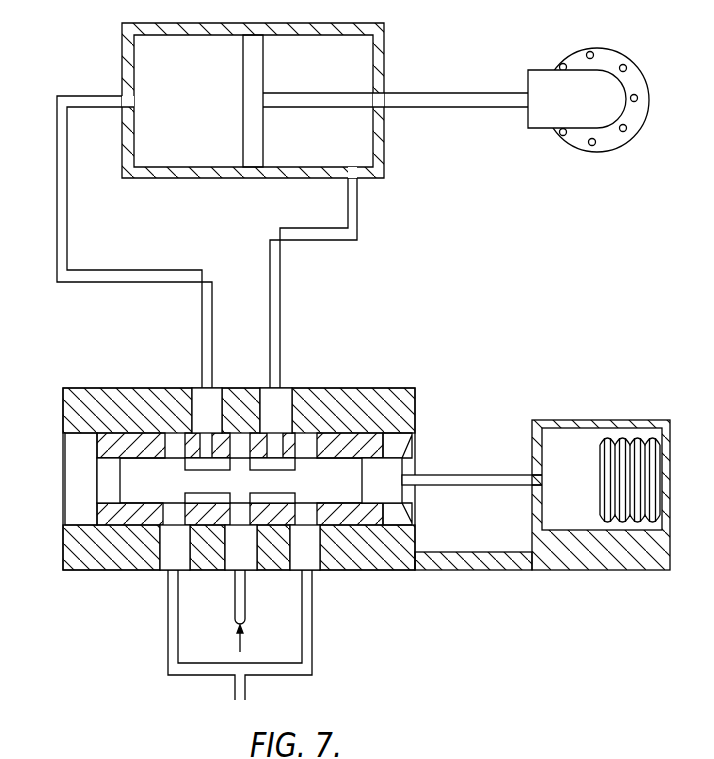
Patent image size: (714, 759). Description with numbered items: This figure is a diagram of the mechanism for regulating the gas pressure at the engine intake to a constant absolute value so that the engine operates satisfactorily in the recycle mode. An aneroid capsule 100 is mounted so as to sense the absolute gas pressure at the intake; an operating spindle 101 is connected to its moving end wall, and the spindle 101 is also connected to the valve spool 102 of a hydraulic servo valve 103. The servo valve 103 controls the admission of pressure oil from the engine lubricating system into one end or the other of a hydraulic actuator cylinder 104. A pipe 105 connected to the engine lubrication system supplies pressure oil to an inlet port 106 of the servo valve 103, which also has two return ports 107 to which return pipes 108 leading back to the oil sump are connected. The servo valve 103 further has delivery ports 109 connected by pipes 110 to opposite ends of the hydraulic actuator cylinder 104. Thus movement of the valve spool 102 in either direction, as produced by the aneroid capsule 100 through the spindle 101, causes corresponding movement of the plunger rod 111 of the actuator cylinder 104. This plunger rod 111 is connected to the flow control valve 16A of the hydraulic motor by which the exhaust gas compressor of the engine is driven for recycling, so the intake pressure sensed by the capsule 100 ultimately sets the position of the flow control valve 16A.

The hydraulic actuator cylinder 104 is at (384, 23).
The plunger rod 111 is at (430, 97).
The flow control valve 16A is at (592, 50).
The pipes 110 is at (139, 275).
The hydraulic servo valve 103 is at (370, 376).
The delivery ports 109 is at (200, 400).
The valve spool 102 is at (343, 494).
The operating spindle 101 is at (462, 476).
The aneroid capsule 100 is at (597, 453).
The return ports 107 is at (172, 555).
The inlet port 106 is at (237, 553).
The pipe 105 is at (245, 593).
The return pipes 108 is at (168, 655).